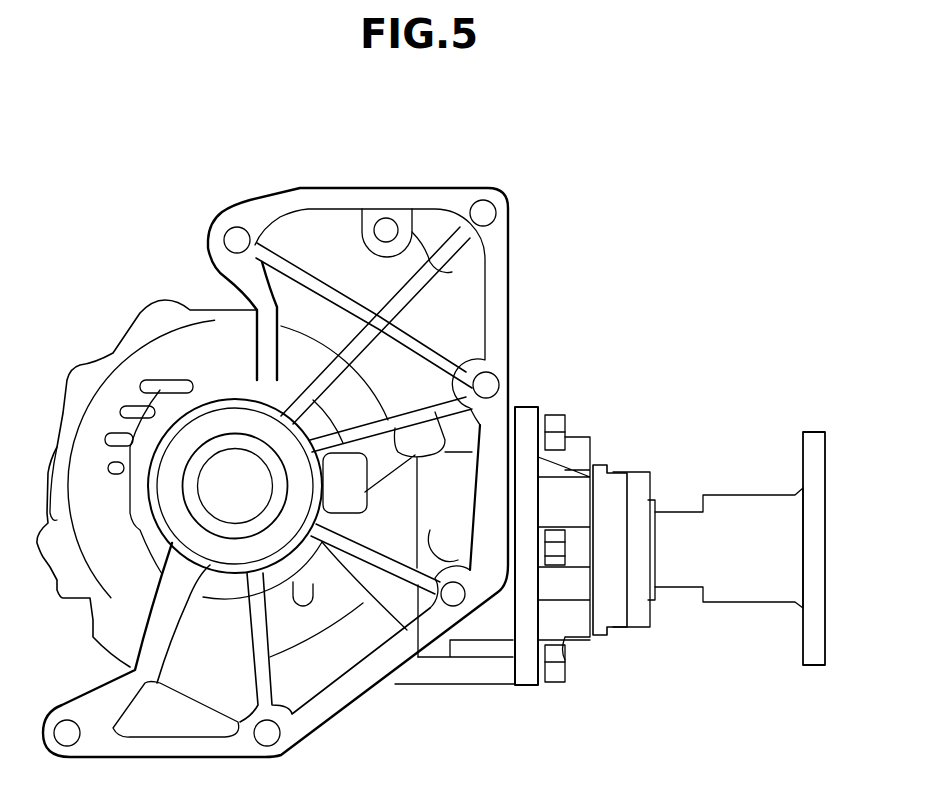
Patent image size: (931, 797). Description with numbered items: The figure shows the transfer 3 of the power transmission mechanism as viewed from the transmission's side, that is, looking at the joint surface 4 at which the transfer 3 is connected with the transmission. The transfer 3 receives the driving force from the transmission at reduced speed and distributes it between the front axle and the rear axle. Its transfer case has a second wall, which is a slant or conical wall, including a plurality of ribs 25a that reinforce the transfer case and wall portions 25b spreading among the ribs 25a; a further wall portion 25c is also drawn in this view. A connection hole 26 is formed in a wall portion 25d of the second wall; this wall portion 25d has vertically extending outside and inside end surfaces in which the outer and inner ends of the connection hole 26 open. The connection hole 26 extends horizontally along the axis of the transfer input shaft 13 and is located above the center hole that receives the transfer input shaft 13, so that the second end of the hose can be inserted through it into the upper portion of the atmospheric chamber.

The transfer 3 is at (577, 450).
The joint surface 4 is at (497, 279).
The transfer input shaft 13 is at (235, 486).
The ribs 25a is at (297, 727).
The wall portions 25b is at (338, 657).
The rib 25c is at (434, 228).
The wall portion 25d is at (420, 231).
The connection hole 26 is at (385, 222).